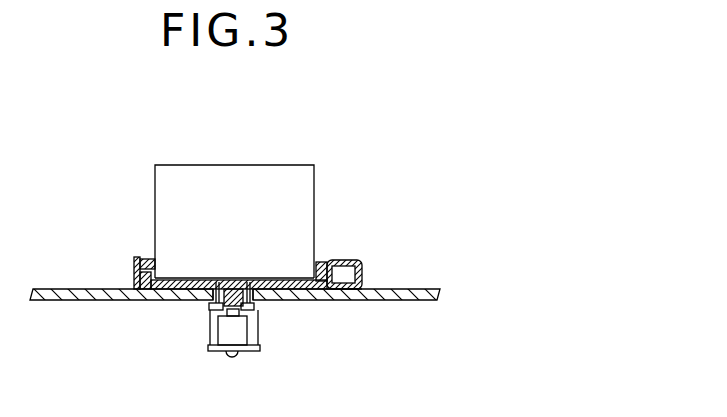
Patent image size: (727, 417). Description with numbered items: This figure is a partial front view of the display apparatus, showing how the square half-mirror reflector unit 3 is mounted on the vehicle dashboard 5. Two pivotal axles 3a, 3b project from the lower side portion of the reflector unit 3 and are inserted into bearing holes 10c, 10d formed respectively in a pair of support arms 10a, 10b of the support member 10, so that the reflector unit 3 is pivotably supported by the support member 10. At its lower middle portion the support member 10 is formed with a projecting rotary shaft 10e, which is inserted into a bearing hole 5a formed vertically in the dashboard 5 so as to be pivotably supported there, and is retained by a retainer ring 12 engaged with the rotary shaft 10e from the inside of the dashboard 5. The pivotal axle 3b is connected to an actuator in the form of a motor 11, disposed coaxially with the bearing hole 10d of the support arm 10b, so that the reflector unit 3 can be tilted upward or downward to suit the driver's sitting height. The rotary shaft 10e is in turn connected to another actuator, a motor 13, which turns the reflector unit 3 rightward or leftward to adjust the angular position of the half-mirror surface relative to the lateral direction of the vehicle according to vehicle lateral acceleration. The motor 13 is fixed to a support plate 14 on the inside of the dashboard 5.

The half-mirror reflector unit 3 is at (303, 172).
The pivotal axle 3a is at (150, 268).
The pivotal axle 3b is at (320, 263).
The dashboard 5 is at (70, 291).
The bearing hole 5a is at (249, 300).
The support member 10 is at (209, 291).
The support arm 10a is at (144, 292).
The support arm 10b is at (358, 262).
The bearing hole 10c is at (135, 262).
The bearing hole 10d is at (334, 292).
The rotary shaft 10e is at (237, 358).
The motor 11 is at (358, 292).
The retainer ring 12 is at (256, 330).
The motor 13 is at (218, 349).
The support plate 14 is at (260, 343).